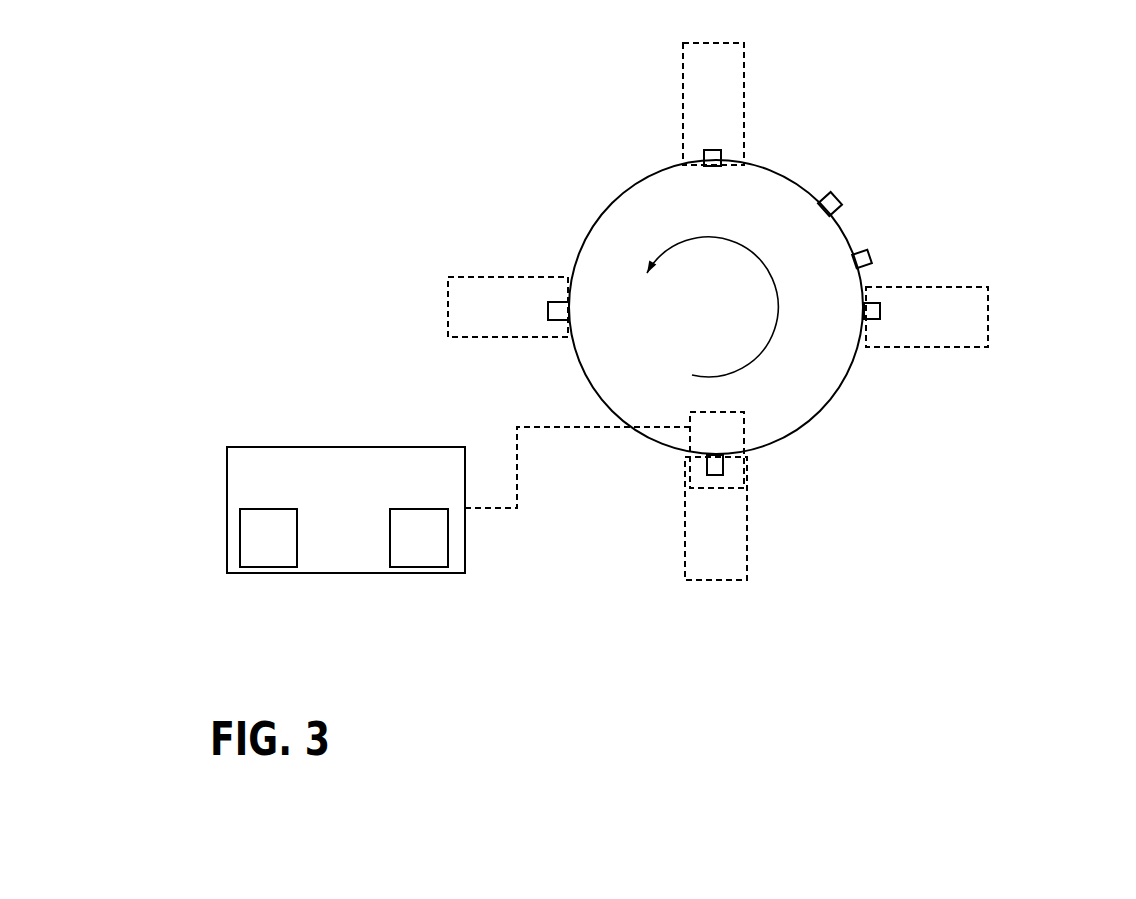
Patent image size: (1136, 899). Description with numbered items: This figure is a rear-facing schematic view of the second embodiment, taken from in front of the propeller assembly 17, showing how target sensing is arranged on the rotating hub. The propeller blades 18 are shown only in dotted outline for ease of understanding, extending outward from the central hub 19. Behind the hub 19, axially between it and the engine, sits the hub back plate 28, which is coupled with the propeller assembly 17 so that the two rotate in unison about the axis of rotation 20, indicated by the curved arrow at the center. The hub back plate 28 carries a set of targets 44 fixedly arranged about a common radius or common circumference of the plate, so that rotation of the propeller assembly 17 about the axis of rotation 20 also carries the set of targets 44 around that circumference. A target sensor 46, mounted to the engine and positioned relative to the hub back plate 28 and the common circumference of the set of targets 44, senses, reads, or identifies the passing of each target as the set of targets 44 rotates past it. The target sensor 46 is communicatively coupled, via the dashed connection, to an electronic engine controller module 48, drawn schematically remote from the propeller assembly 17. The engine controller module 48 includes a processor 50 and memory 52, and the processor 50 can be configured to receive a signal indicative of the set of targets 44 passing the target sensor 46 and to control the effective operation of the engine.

The propeller assembly 17 is at (793, 337).
The hub 19 is at (793, 337).
The hub back plate 28 is at (845, 428).
The propeller blades 18 is at (683, 77).
The axis of rotation 20 is at (715, 310).
The set of targets 44 is at (704, 156).
The target sensor 46 is at (745, 436).
The engine controller module 48 is at (335, 553).
The processor 50 is at (257, 553).
The memory 52 is at (408, 553).